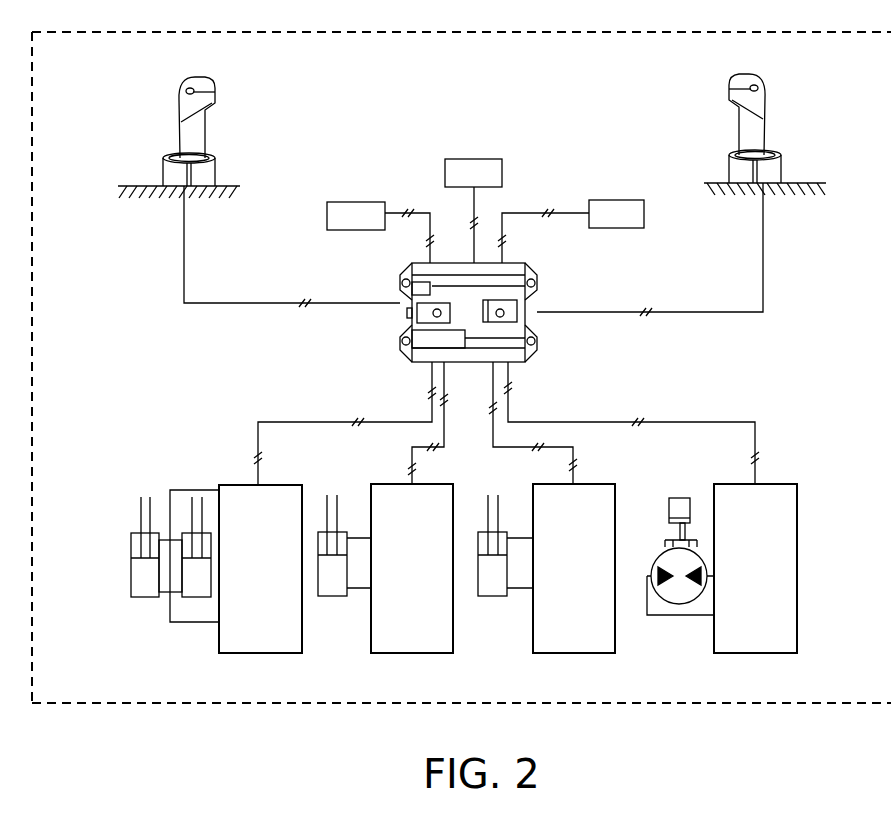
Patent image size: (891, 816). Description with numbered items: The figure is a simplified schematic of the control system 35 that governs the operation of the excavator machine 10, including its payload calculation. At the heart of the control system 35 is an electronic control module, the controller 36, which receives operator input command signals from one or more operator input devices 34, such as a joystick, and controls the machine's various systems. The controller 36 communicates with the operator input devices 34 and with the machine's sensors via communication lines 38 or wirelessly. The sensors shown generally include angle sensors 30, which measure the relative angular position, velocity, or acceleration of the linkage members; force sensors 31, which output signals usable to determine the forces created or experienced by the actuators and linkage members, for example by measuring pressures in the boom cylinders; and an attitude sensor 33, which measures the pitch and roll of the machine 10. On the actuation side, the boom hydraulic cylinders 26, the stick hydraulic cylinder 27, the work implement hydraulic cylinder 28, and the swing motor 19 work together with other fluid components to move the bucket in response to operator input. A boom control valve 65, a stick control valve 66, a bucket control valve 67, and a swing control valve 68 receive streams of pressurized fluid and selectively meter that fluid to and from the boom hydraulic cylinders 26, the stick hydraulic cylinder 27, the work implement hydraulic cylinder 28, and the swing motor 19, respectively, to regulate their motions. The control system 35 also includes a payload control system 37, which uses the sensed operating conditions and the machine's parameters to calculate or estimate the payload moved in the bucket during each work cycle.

The machine 10 is at (695, 705).
The swing motor 19 is at (680, 597).
The boom hydraulic cylinders 26 is at (198, 577).
The stick hydraulic cylinder 27 is at (334, 597).
The work implement hydraulic cylinder 28 is at (492, 597).
The angle sensors 30 is at (360, 205).
The force sensors 31 is at (474, 172).
The attitude sensor 33 is at (612, 208).
The operator input device 34 is at (185, 128).
The control system 35 is at (771, 362).
The controller 36 is at (530, 320).
The payload control system 37 is at (190, 362).
The communication lines 38 is at (478, 200).
The boom control valve 65 is at (246, 640).
The stick control valve 66 is at (570, 640).
The bucket control valve 67 is at (410, 640).
The swing control valve 68 is at (764, 642).